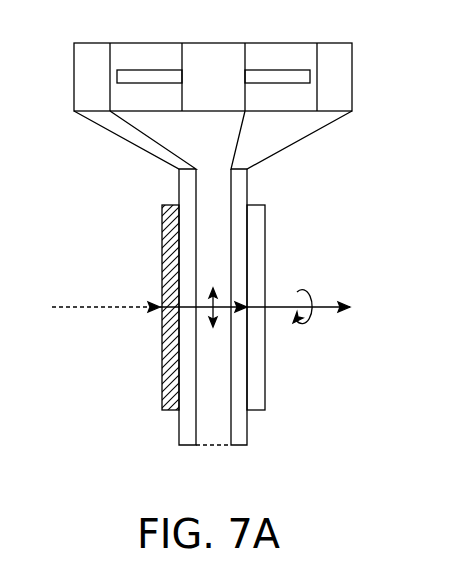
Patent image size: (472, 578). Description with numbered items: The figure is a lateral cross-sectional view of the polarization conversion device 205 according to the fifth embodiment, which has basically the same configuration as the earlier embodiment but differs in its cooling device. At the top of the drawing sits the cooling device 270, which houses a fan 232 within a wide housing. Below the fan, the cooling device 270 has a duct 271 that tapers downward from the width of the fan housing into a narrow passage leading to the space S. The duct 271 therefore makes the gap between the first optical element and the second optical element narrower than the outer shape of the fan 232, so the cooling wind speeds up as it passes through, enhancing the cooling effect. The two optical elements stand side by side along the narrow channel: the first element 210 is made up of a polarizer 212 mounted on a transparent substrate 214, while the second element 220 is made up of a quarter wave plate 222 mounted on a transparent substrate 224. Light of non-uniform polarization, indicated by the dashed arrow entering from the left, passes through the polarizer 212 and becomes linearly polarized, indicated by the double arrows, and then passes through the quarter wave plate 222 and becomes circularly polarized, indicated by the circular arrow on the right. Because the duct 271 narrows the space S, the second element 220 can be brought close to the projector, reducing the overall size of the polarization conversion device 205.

The polarization conversion device 205 is at (233, 257).
The cooling device 270 is at (255, 59).
The fan 232 is at (282, 70).
The duct 271 is at (288, 146).
The first element 210 is at (113, 307).
The transparent substrate 214 is at (179, 185).
The polarizer 212 is at (162, 215).
The second element 220 is at (314, 307).
The ¼ wave plate 222 is at (265, 397).
The transparent substrate 224 is at (248, 420).
The space S is at (213, 447).